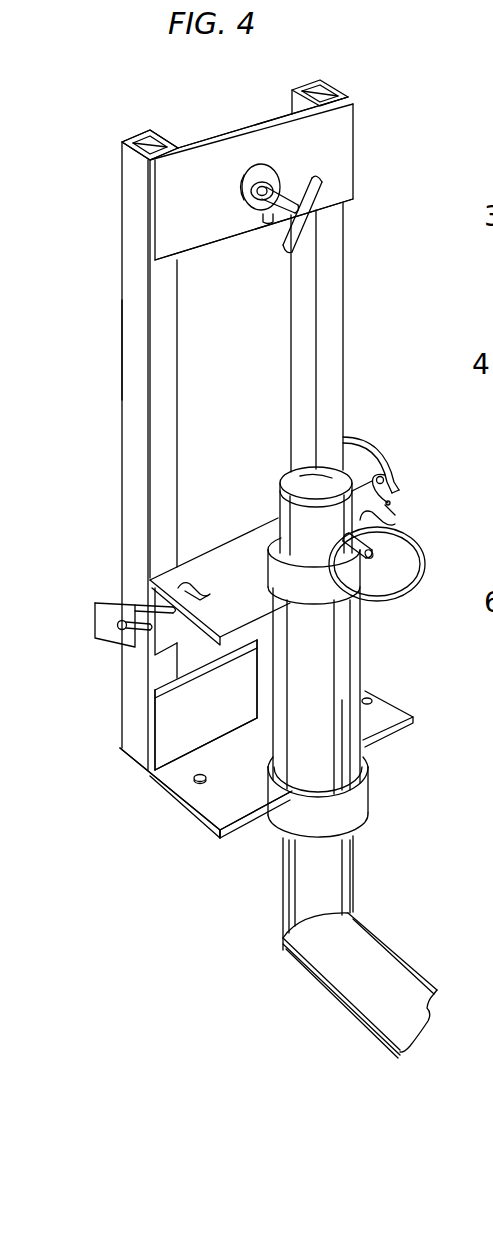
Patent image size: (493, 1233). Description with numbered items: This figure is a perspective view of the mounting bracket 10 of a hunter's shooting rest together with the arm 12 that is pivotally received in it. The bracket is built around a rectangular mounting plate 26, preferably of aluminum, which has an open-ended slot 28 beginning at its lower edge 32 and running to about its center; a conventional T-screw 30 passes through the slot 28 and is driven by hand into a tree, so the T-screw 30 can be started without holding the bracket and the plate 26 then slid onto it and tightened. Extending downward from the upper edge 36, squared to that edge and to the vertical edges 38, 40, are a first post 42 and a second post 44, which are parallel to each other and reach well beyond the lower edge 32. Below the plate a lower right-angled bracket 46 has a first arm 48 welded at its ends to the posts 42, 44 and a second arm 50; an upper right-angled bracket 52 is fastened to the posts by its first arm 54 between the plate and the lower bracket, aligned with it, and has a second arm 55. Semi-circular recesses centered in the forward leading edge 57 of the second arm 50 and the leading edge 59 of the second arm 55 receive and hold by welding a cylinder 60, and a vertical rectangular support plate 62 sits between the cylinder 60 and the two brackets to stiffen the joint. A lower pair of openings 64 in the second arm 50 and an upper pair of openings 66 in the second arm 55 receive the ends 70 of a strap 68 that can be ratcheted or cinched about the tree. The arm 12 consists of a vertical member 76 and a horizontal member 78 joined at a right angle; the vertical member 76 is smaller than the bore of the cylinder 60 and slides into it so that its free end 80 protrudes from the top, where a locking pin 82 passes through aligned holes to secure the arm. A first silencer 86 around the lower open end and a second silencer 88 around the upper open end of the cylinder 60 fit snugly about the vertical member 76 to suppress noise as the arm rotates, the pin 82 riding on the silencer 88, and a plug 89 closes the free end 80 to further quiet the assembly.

The mounting bracket 10 is at (93, 144).
The arm 12 is at (265, 1004).
The mounting plate 26 is at (211, 212).
The slot 28 is at (267, 226).
The T-screw 30 is at (320, 182).
The lower edge 32 is at (214, 257).
The upper edge 36 is at (241, 124).
The vertical edge 38 is at (148, 228).
The vertical edge 40 is at (355, 130).
The first post 42 is at (125, 352).
The second post 44 is at (345, 298).
The lower right-angled bracket 46 is at (148, 768).
The first arm 48 is at (148, 720).
The second arm 50 is at (200, 818).
The upper right-angled bracket 52 is at (150, 578).
The first arm 54 is at (150, 648).
The second arm 55 is at (398, 512).
The leading edge 57 is at (240, 828).
The leading edge 59 is at (407, 553).
The cylinder 60 is at (350, 726).
The support plate 62 is at (257, 695).
The lower pair of aligned openings 64 is at (195, 781).
The upper pair of aligned openings 66 is at (378, 522).
The strap 68 is at (372, 447).
The ends 70 is at (397, 486).
The vertical member 76 is at (285, 893).
The horizontal member 78 is at (380, 1017).
The free end 80 is at (279, 519).
The locking pin 82 is at (385, 605).
The first silencer 86 is at (368, 815).
The second silencer 88 is at (315, 590).
The plug 89 is at (300, 471).